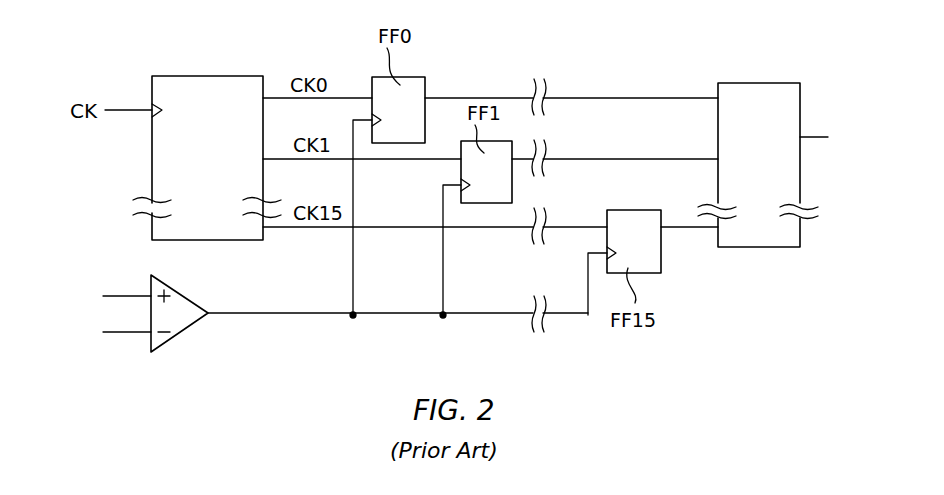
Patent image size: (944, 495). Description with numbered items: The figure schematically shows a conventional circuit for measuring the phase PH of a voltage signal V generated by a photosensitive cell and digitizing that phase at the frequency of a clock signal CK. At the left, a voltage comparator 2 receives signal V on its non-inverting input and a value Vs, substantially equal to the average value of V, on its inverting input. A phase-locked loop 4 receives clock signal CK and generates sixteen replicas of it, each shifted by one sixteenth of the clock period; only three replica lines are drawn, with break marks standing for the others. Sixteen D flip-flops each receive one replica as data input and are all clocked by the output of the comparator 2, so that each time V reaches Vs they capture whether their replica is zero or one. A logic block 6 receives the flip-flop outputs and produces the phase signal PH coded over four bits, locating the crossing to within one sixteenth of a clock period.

The voltage comparator 2 is at (186, 320).
The phase-locked loop 4 is at (211, 84).
The logic block 6 is at (745, 246).